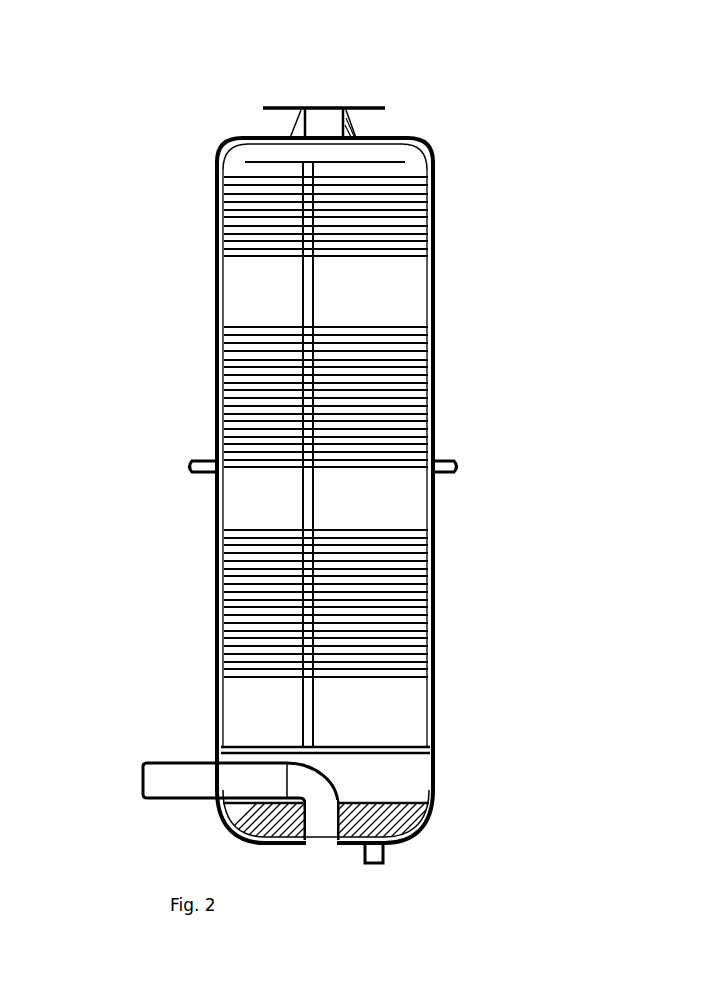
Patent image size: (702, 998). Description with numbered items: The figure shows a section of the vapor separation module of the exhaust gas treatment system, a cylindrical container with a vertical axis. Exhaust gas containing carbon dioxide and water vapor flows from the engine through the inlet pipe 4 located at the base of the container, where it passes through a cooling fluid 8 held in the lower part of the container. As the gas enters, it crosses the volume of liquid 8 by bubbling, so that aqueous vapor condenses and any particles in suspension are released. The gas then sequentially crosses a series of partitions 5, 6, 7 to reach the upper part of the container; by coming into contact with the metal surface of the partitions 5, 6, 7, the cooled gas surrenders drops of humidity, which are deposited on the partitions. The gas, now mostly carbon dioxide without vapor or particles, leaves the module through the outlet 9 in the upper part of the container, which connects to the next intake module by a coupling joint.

The exhaust gas inlet 4 is at (163, 778).
The partition 5 is at (185, 586).
The partition 6 is at (453, 403).
The partition 7 is at (453, 213).
The cooling fluid 8 is at (408, 827).
The outlet 9 is at (327, 100).